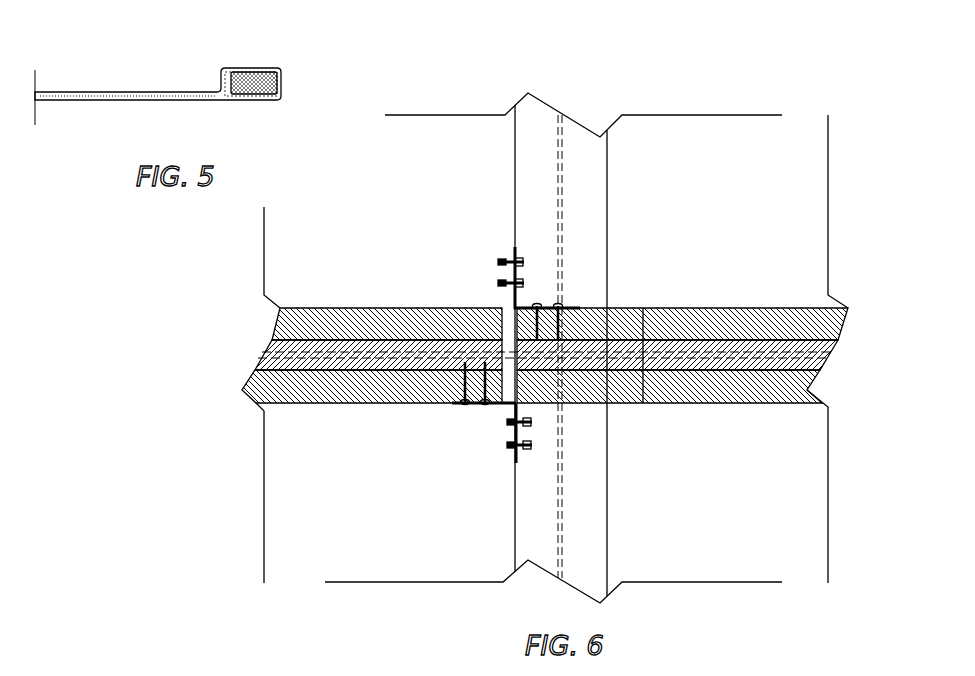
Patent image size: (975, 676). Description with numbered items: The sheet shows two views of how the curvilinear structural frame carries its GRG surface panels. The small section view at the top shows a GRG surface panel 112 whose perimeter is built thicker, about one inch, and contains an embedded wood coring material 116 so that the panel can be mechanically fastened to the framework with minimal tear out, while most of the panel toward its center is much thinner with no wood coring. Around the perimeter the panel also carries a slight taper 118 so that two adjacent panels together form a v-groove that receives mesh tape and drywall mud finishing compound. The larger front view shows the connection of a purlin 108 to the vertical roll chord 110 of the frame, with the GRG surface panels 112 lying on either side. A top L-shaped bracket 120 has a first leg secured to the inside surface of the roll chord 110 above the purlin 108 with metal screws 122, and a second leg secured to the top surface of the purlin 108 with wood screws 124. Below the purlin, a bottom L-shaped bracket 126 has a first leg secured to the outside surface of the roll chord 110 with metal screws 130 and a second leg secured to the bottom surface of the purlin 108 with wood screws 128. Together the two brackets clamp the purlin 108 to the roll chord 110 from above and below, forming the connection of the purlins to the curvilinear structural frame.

In FIG. 6, the purlin 108 is at (267, 306).
In FIG. 6, the roll chord 110 is at (590, 178).
In FIG. 5, the GRG surface panel 112 is at (104, 125).
In FIG. 6, the GRG surface panel 112 is at (403, 210).
In FIG. 5, the wood coring material 116 is at (257, 76).
In FIG. 5, the taper 118 is at (267, 100).
In FIG. 6, the top L-shaped bracket 120 is at (514, 248).
In FIG. 6, the metal screws 122 is at (498, 283).
In FIG. 6, the wood screws 124 is at (560, 303).
In FIG. 6, the bottom L-shaped bracket 126 is at (512, 458).
In FIG. 6, the wood screws 128 is at (485, 405).
In FIG. 6, the metal screws 130 is at (532, 445).